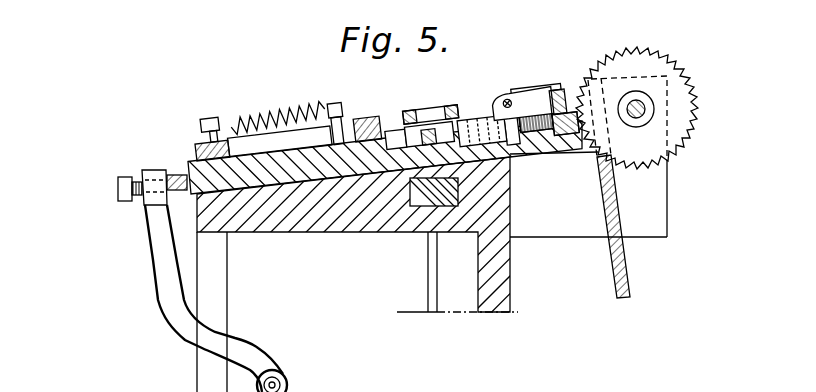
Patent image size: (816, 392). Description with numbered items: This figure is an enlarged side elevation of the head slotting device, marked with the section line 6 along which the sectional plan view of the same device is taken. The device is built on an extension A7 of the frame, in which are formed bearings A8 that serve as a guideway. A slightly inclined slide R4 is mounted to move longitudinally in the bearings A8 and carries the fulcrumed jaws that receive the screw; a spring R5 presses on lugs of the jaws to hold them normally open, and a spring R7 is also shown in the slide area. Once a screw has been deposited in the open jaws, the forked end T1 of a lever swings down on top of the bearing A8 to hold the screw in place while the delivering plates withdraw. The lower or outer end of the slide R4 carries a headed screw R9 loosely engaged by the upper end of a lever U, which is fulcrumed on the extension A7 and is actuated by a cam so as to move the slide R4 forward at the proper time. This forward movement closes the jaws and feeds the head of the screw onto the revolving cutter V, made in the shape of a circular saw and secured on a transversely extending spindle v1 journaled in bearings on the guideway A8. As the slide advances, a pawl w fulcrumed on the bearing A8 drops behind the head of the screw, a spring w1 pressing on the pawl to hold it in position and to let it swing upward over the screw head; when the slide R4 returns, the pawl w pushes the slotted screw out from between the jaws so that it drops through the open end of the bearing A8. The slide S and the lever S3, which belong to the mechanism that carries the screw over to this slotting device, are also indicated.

The section line 6— 6 is at (186, 163).
The headed screw R9 is at (118, 190).
The lever U is at (160, 243).
The spring R7 is at (307, 87).
The slide R4 is at (390, 134).
The forked end of lever T T1 is at (433, 120).
The spring R5 is at (467, 122).
The pawl w is at (532, 102).
The spring w1 is at (552, 88).
The revolving cutter V is at (686, 135).
The spindle v1 is at (642, 121).
The extension A7 is at (467, 203).
The bearings A8 is at (305, 218).
The slide S is at (425, 202).
The lever S3 is at (437, 284).